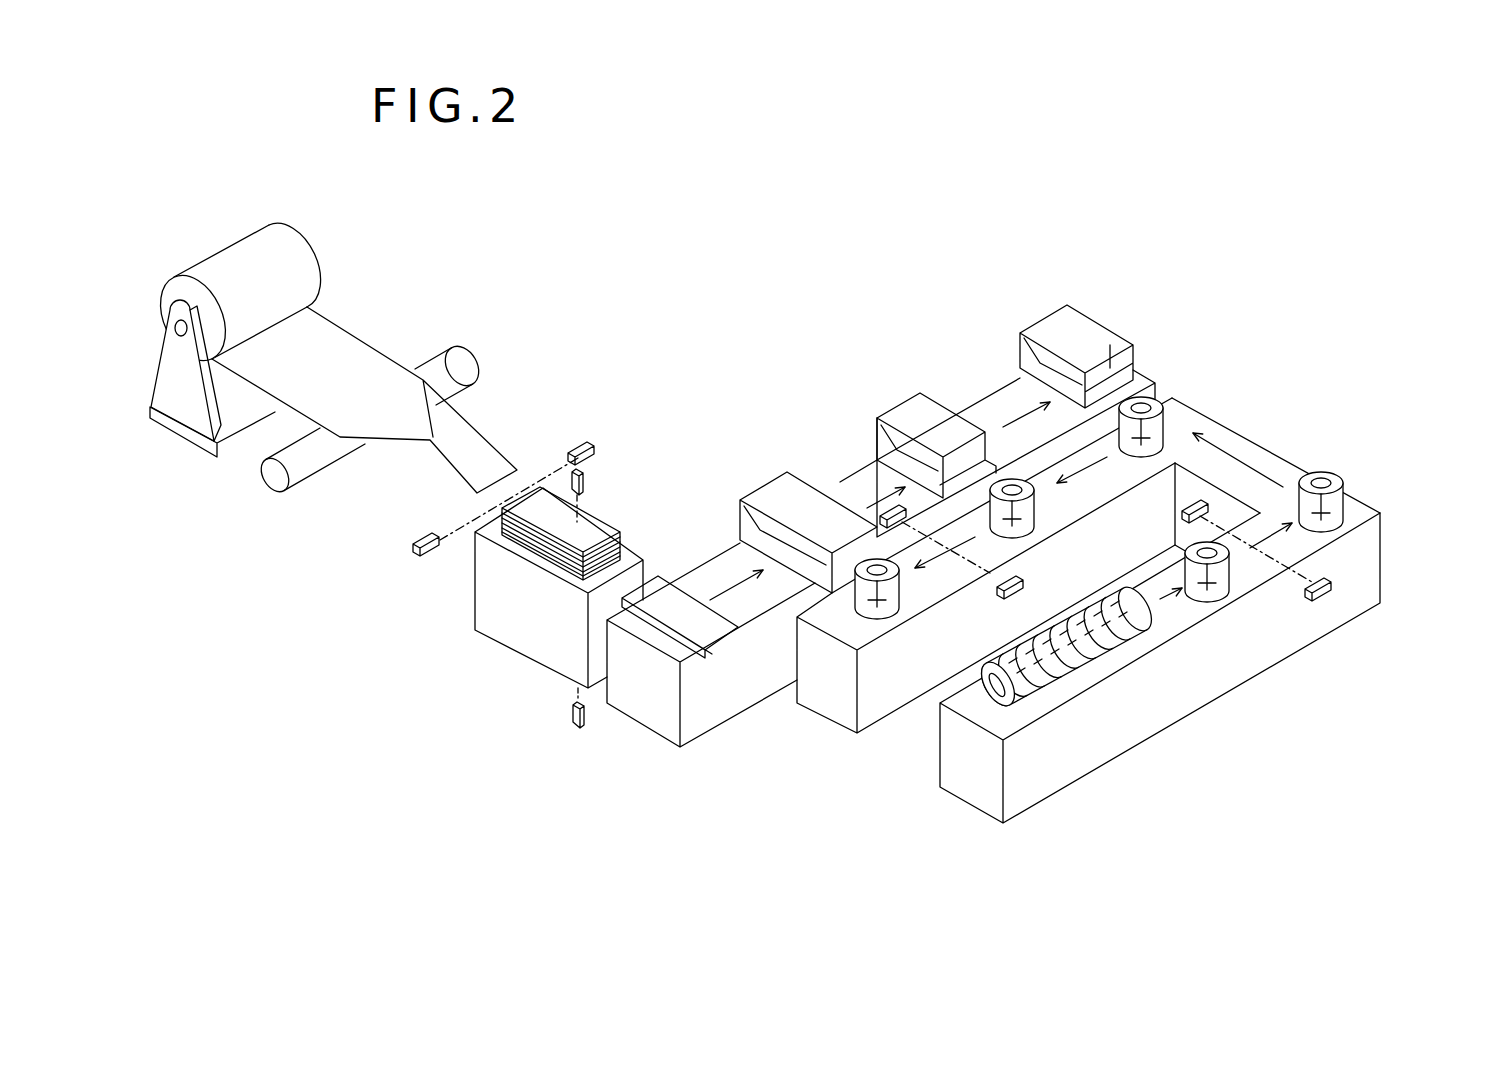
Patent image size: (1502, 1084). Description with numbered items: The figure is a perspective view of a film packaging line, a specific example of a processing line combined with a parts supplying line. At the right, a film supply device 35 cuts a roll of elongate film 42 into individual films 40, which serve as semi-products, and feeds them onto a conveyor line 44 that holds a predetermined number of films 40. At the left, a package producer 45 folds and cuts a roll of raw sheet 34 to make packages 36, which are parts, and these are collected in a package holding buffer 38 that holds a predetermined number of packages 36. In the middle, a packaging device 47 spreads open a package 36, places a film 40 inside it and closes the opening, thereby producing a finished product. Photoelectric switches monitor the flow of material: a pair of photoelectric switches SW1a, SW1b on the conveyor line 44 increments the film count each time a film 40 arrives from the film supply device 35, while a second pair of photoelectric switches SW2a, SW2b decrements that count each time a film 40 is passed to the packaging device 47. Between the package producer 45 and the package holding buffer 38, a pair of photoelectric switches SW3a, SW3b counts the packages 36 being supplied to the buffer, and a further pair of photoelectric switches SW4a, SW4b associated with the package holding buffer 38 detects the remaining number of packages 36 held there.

The roll of raw sheet 34 is at (246, 242).
The package producer 45 is at (378, 304).
The packaging device 47 is at (845, 378).
The package 36 is at (668, 613).
The package holding buffer 38 is at (530, 600).
The film 40 is at (886, 602).
The roll of elongate film 42 is at (1022, 692).
The conveyor line 44 is at (1273, 467).
The film supply device 35 is at (1125, 685).
The photoelectric switch SW1a is at (1331, 585).
The photoelectric switch SW1b is at (1183, 512).
The photoelectric switch SW2a is at (1007, 598).
The photoelectric switch SW2b is at (898, 508).
The photoelectric switch SW3a is at (590, 437).
The photoelectric switch SW3b is at (426, 554).
The photoelectric switch SW4a is at (584, 478).
The photoelectric switch SW4b is at (586, 727).